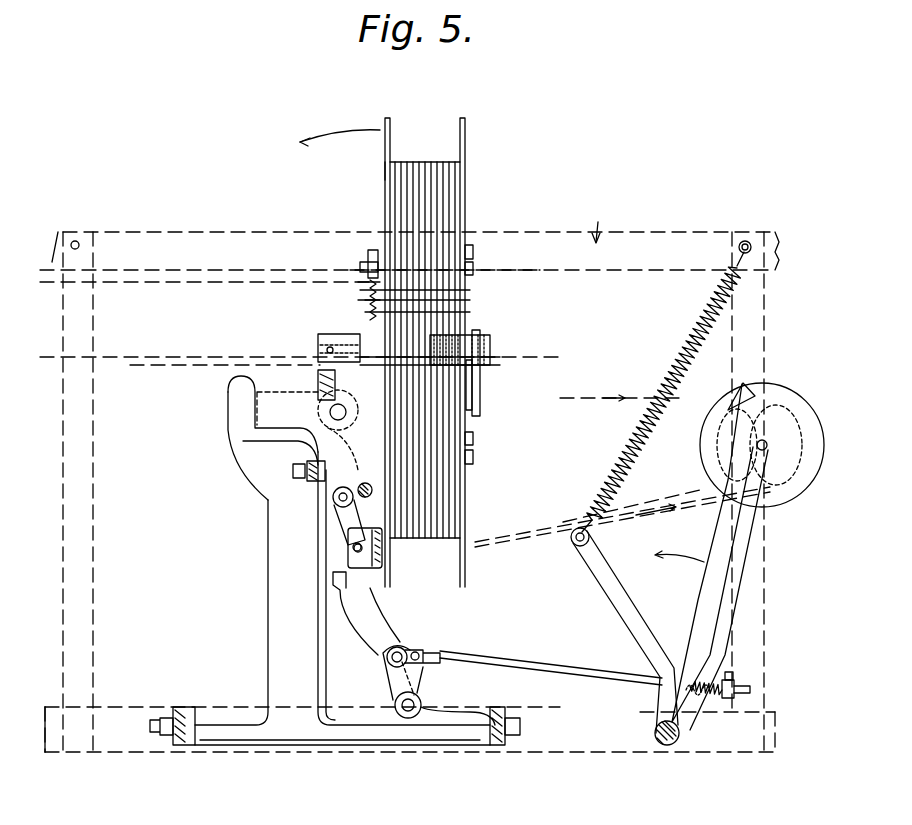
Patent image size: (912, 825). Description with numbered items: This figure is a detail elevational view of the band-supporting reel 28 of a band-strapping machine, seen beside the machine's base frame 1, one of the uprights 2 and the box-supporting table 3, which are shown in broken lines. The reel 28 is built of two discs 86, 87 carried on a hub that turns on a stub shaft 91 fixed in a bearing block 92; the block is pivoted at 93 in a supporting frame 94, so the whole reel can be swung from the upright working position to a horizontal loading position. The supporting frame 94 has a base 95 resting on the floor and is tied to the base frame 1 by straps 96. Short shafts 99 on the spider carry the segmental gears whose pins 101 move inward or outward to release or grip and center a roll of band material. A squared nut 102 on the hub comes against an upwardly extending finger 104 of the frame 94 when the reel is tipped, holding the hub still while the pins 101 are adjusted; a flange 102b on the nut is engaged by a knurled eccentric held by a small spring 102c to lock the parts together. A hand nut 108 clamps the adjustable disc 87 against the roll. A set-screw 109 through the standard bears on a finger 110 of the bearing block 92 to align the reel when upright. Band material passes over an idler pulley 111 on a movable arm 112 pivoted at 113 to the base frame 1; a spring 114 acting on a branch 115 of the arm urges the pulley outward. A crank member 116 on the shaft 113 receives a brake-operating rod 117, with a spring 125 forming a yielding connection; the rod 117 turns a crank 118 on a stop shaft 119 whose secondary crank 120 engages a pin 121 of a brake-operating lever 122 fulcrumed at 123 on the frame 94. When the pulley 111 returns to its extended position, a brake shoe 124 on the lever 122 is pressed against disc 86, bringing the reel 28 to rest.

The base frame 1 is at (128, 752).
The uprights 2 is at (93, 530).
The box-supporting table 3 is at (600, 219).
The reel 28 is at (468, 132).
The disc 86 is at (385, 179).
The disc 87 is at (466, 210).
The stub shaft 91 is at (318, 347).
The bearing block 92 is at (318, 392).
The pivot pin 93 is at (338, 412).
The supporting frame 94 is at (268, 554).
The base 95 is at (242, 742).
The straps 96 is at (178, 746).
The short shafts 99 is at (473, 268).
The pin 101 is at (473, 252).
The nut 102 is at (360, 328).
The flange 102b is at (368, 268).
The spring 102c is at (362, 305).
The finger 104 is at (232, 402).
The hand nut 108 is at (480, 410).
The set-screw 109 is at (293, 471).
The finger 110 is at (333, 497).
The idler pulley 111 is at (782, 402).
The movable arm 112 is at (708, 602).
The shaft 113 is at (664, 745).
The spring 114 is at (690, 356).
The branch 115 is at (628, 614).
The crank member 116 is at (688, 716).
The brake-operating rod 117 is at (526, 668).
The crank 118 is at (424, 668).
The stop shaft 119 is at (406, 714).
The secondary crank 120 is at (382, 675).
The pin 121 is at (402, 647).
The brake-operating lever 122 is at (378, 618).
The fulcrum 123 is at (338, 508).
The brake shoe 124 is at (360, 568).
The spring 125 is at (710, 676).